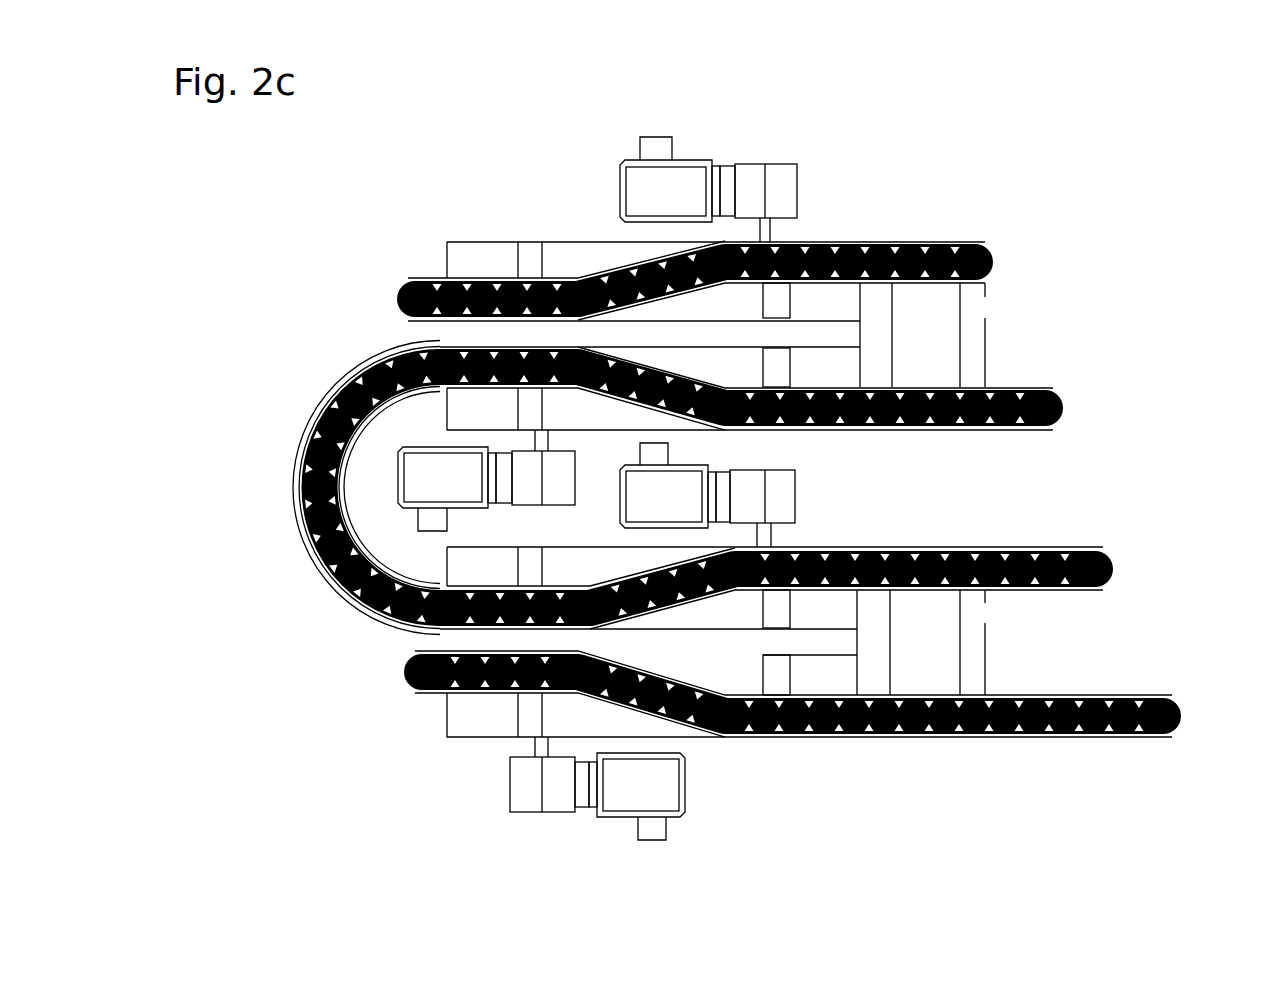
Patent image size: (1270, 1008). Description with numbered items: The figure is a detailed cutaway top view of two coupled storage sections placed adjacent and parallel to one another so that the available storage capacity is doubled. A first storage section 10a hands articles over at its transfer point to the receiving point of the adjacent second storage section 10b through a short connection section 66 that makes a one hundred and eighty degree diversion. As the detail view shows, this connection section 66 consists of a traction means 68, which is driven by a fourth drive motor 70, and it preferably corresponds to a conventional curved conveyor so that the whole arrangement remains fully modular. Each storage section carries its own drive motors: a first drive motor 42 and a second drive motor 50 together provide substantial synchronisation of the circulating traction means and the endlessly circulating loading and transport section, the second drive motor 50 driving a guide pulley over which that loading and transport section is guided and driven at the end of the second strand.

The first storage section 10a is at (1012, 203).
The second storage section 10b is at (1137, 799).
The first drive motor 42 is at (652, 207).
The second drive motor 50 is at (458, 492).
The fourth drive motor 70 is at (650, 512).
The connection section 66 is at (308, 544).
The traction means 68 is at (300, 602).